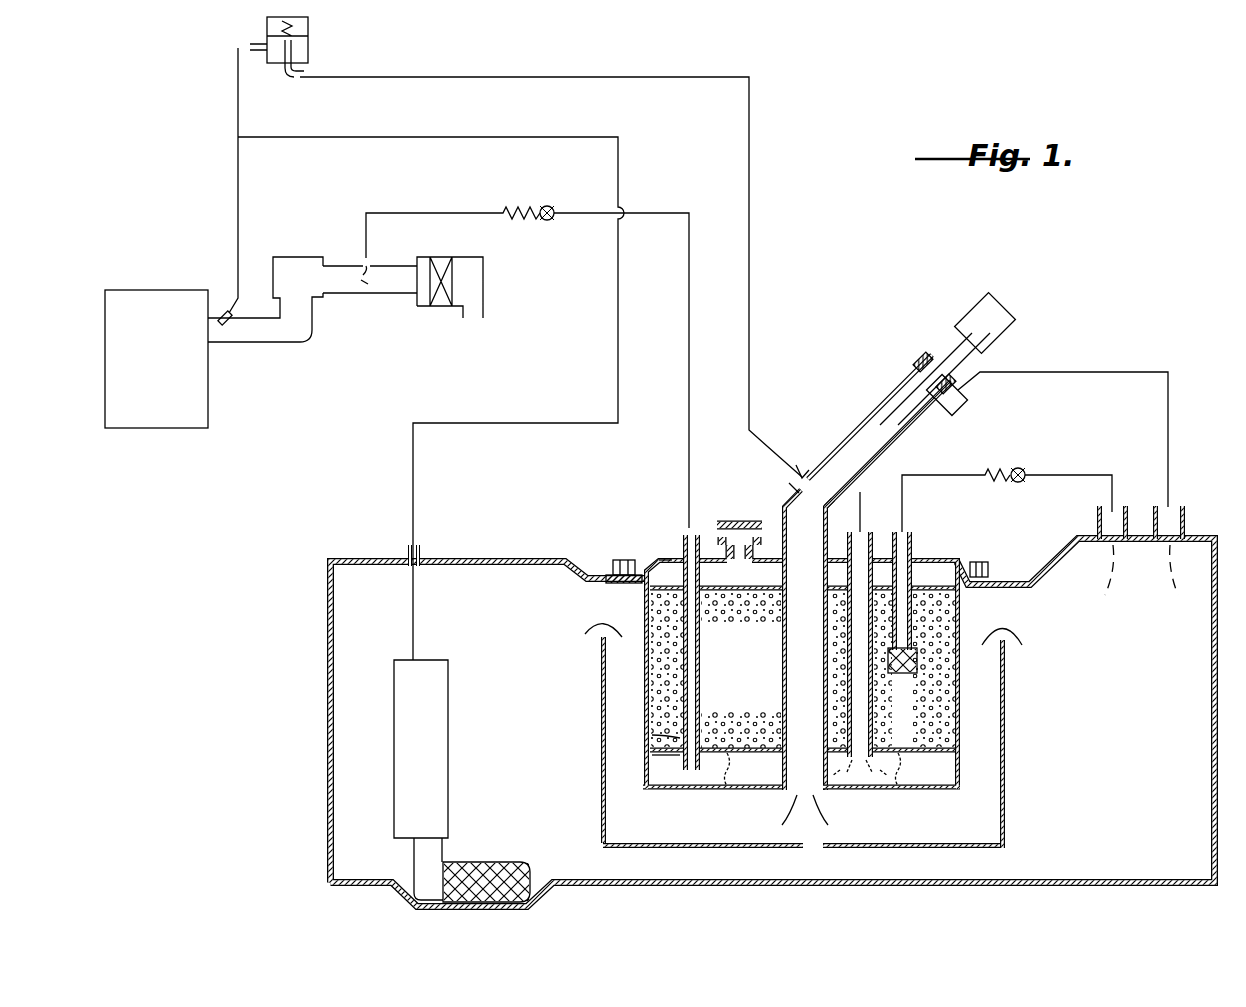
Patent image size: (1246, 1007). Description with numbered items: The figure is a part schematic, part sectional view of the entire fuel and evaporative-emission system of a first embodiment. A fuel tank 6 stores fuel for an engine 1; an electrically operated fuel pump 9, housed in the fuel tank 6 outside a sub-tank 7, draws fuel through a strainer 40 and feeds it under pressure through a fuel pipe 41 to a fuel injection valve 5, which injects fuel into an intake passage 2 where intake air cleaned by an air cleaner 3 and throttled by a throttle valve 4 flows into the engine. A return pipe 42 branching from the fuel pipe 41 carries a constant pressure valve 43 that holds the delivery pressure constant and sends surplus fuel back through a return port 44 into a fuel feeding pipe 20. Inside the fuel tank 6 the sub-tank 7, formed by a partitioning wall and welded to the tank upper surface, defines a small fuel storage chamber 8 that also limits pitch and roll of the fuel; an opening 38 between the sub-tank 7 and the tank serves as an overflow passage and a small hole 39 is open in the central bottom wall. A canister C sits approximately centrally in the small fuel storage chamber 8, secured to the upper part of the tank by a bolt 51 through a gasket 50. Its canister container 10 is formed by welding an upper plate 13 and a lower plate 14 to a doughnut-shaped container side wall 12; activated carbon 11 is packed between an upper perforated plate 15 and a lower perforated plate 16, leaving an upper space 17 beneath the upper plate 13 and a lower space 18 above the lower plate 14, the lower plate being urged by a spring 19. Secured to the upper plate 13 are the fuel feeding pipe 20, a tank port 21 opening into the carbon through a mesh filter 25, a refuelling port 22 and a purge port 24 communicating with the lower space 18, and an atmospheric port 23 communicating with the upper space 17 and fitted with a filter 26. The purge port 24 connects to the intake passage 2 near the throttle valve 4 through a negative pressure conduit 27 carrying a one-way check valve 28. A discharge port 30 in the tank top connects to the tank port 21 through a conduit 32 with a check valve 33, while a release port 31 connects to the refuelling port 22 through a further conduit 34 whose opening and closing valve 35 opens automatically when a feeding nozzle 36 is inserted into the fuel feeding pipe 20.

The engine 1 is at (103, 370).
The intake passage 2 is at (336, 300).
The air cleaner 3 is at (442, 310).
The throttle valve 4 is at (372, 280).
The fuel injection valve 5 is at (222, 306).
The fuel tank 6 is at (1075, 890).
The sub-tank 7 is at (1008, 742).
The small fuel storage chamber 8 is at (741, 825).
The fuel pump 9 is at (392, 750).
The canister container 10 is at (648, 715).
The activated carbon 11 is at (652, 760).
The container side wall 12 is at (652, 740).
The upper plate 13 is at (767, 555).
The lower plate 14 is at (719, 776).
The upper perforated plate 15 is at (665, 648).
The lower perforated plate 16 is at (660, 772).
The upper space 17 is at (664, 565).
The lower space 18 is at (684, 780).
The spring 19 is at (899, 793).
The fuel feeding pipe 20 is at (845, 452).
The tank port 21 is at (905, 548).
The refuelling port 22 is at (870, 548).
The atmospheric port 23 is at (720, 530).
The purge port 24 is at (683, 535).
The mesh filter 25 is at (917, 665).
The filter 26 is at (740, 519).
The negative pressure conduit 27 is at (368, 212).
The check valve 28 is at (547, 221).
The discharge port 30 is at (1100, 518).
The release port 31 is at (1185, 518).
The conduit 32 is at (946, 475).
The check valve 33 is at (1022, 468).
The conduit 34 is at (1107, 372).
The opening and closing valve 35 is at (962, 405).
The feeding nozzle 36 is at (1008, 320).
The opening 38 is at (1016, 608).
The small hole 39 is at (818, 852).
The strainer 40 is at (478, 896).
The fuel pipe 41 is at (473, 138).
The return pipe 42 is at (598, 77).
The constant pressure valve 43 is at (307, 47).
The return port 44 is at (797, 462).
The gasket 50 is at (612, 585).
The bolt 51 is at (617, 563).
The canister C is at (625, 690).